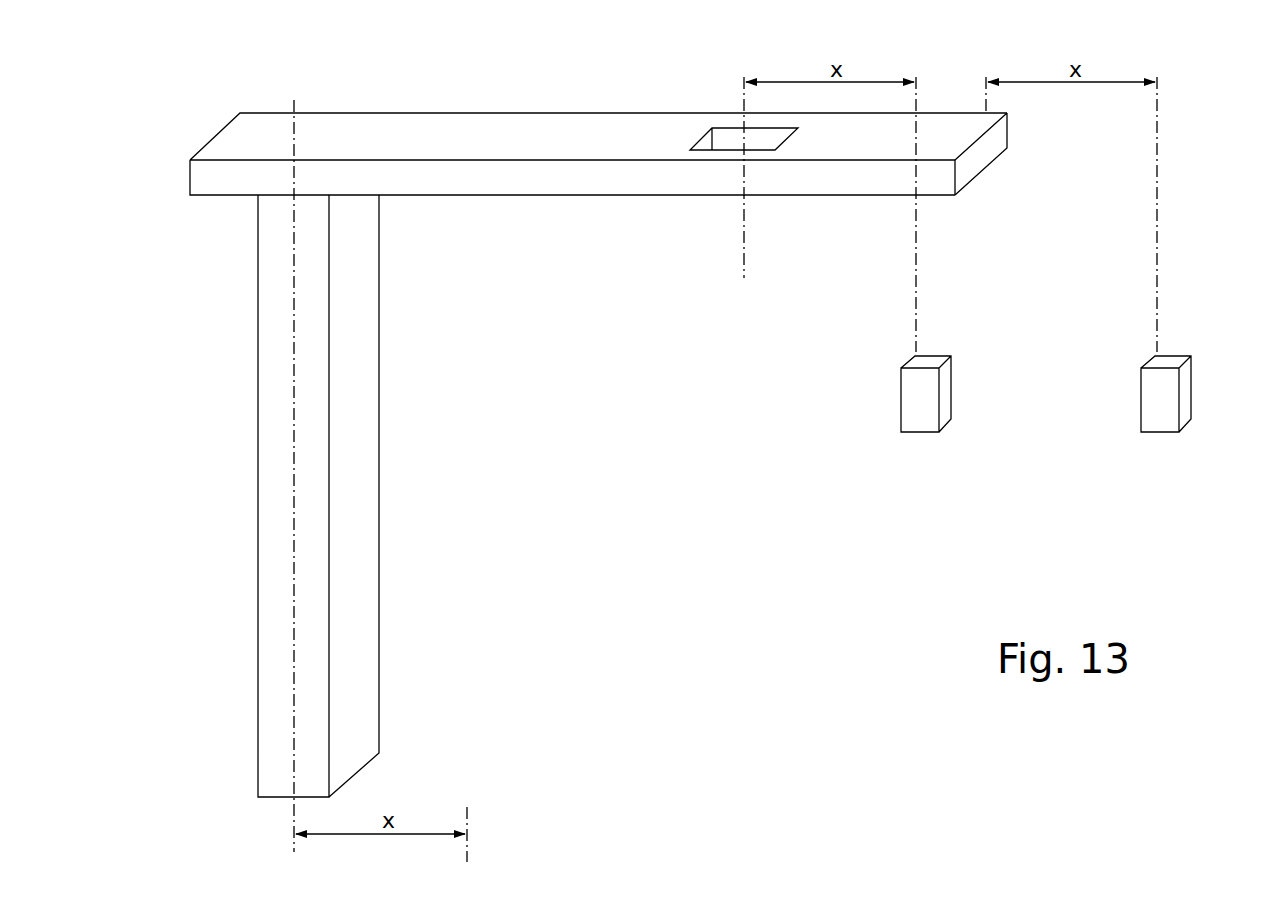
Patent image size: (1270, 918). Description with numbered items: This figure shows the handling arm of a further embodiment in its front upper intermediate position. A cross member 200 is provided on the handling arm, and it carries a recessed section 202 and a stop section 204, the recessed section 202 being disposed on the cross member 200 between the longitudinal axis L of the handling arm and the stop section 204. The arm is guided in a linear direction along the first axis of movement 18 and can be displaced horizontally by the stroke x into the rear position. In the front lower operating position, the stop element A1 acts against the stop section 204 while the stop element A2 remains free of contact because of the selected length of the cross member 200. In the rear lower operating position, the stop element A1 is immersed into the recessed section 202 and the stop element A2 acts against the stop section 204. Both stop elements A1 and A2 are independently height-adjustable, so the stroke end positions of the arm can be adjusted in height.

The cross member 200 is at (525, 140).
The recessed section 202 is at (730, 138).
The stop section 204 is at (945, 125).
The first axis of movement 18 is at (275, 565).
The longitudinal axis L is at (294, 103).
The stop element A1 is at (918, 415).
The stop element A2 is at (1158, 415).